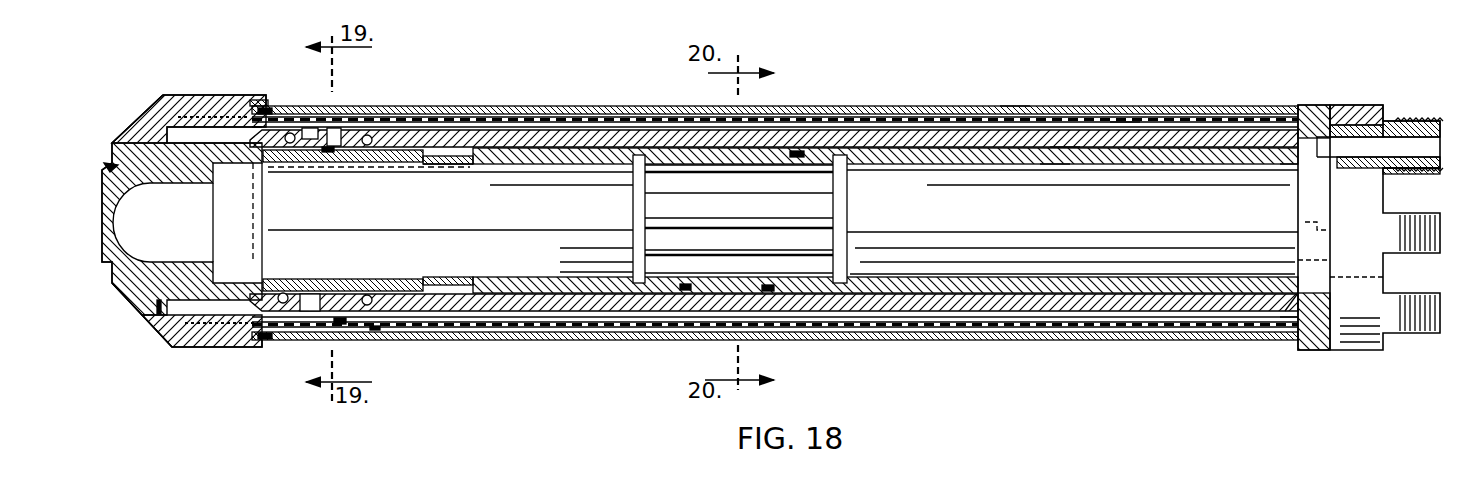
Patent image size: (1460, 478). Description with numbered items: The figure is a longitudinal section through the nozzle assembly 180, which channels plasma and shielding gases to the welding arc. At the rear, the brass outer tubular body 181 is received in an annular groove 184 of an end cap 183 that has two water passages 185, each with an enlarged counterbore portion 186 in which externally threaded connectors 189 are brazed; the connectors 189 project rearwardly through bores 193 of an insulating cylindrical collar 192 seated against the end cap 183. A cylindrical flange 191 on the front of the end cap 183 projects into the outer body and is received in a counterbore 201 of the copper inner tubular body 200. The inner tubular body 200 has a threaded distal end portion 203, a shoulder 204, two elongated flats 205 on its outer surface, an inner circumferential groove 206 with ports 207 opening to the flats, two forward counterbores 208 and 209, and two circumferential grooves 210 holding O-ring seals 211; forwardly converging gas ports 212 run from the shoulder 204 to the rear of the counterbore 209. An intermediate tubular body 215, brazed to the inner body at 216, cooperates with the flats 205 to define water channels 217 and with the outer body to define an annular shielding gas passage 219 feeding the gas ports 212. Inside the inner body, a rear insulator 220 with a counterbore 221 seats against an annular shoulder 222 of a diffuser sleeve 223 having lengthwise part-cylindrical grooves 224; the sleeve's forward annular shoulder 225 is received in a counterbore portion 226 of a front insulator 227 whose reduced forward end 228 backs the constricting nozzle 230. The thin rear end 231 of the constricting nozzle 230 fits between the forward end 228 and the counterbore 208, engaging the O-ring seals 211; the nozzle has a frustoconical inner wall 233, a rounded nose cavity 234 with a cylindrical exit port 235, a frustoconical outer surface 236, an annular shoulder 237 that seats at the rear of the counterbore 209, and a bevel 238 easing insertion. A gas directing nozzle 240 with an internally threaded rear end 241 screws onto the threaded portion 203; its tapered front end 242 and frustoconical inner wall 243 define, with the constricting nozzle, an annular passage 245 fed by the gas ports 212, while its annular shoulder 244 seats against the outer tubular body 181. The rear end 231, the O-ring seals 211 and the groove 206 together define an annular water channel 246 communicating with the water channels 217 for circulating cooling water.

The nozzle assembly 180 is at (910, 44).
The outer tubular body 181 is at (1013, 106).
The end cap 183 is at (1317, 104).
The annular groove 184 is at (1277, 313).
The water passages 185 is at (1290, 136).
The counterbore portion 186 is at (1362, 318).
The externally threaded connectors 189 is at (1400, 118).
The cylindrical flange 191 is at (1268, 321).
The cylindrical collar 192 is at (1347, 104).
The bores 193 is at (1383, 174).
The inner tubular body 200 is at (1065, 136).
The counterbore 201 is at (1287, 167).
The externally threaded distal end portion 203 is at (208, 113).
The shoulder 204 is at (308, 126).
The elongated flats 205 is at (920, 128).
The circumferential groove 206 is at (338, 140).
The ports 207 is at (375, 330).
The counterbore 208 is at (433, 152).
The counterbore 209 is at (228, 347).
The circumferential grooves 210 is at (334, 104).
The O-ring seals 211 is at (362, 300).
The gas ports 212 is at (270, 108).
The intermediate tubular body 215 is at (633, 125).
The brazing ring location 216 is at (340, 326).
The water channels 217 is at (561, 125).
The annular shielding gas passage 219 is at (1127, 117).
The rear insulator 220 is at (1055, 163).
The counterbore 221 is at (840, 160).
The annular shoulder 222 is at (798, 152).
The diffuser sleeve 223 is at (767, 291).
The part-cylindrical grooves 224 is at (643, 253).
The annular shoulder 225 is at (685, 312).
The counterbore portion 226 is at (637, 311).
The front insulator 227 is at (542, 283).
The reduced outer diameter forward end 228 is at (443, 278).
The constricting nozzle 230 is at (158, 320).
The rear end 231 is at (284, 287).
The inner wall 233 is at (268, 196).
The nose cavity 234 is at (152, 204).
The exit port 235 is at (125, 228).
The frustoconical outer surface 236 is at (170, 132).
The annular shoulder 237 is at (260, 287).
The bevel 238 is at (430, 148).
The gas directing nozzle 240 is at (165, 74).
The internally threaded rear end 241 is at (213, 347).
The tapered front end 242 is at (147, 127).
The frustoconical inner wall 243 is at (147, 298).
The annular shoulder 244 is at (267, 108).
The annular passage 245 is at (113, 168).
The annular water channel 246 is at (328, 154).